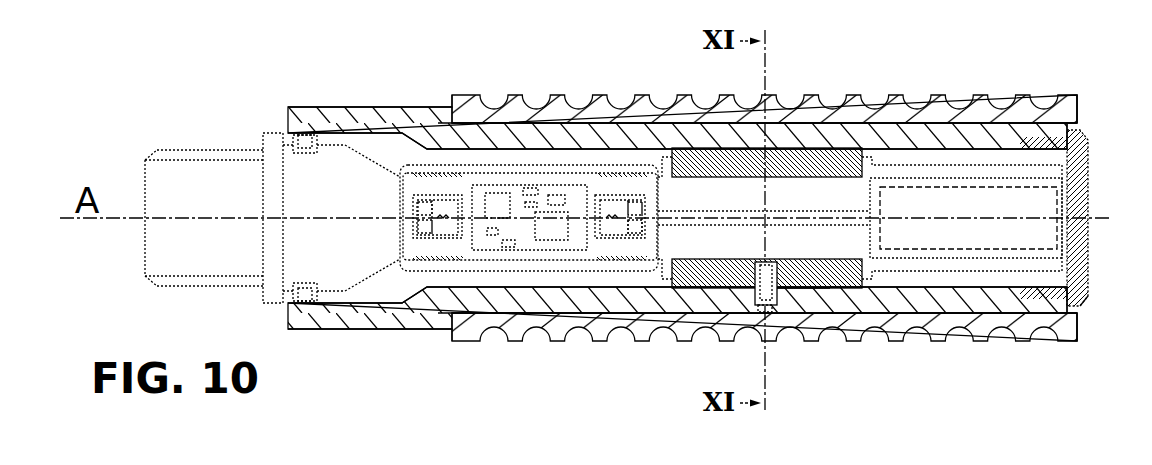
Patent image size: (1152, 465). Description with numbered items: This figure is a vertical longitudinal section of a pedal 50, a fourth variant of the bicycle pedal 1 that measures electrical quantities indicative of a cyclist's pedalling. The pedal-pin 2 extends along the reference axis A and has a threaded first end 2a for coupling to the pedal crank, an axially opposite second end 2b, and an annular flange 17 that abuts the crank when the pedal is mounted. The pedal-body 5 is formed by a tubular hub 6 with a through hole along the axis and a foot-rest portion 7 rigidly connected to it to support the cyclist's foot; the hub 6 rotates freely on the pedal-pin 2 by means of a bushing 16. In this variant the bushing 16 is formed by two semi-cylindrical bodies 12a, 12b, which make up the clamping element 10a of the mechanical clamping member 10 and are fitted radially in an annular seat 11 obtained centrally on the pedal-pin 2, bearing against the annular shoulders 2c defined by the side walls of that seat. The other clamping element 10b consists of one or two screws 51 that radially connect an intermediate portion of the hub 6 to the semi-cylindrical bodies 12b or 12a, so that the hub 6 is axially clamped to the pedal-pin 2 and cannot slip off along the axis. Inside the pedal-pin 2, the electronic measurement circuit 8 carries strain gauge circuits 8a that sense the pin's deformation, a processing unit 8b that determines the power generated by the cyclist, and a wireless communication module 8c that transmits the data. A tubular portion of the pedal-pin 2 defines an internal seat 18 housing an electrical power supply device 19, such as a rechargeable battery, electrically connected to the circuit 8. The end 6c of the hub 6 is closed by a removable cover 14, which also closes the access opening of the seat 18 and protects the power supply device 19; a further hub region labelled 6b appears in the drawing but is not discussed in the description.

The pedal 1 is at (678, 217).
The pedal-pin 2 is at (597, 230).
The first end 2a is at (193, 146).
The second end 2b is at (1070, 161).
The annular shoulders 2c is at (684, 166).
The pedal-body 5 is at (1079, 92).
The hub 6 is at (858, 148).
The flange 6b is at (286, 118).
The end of the hub 6c is at (1081, 124).
The foot-rest portion 7 is at (930, 97).
The electronic measurement circuit 8 is at (530, 230).
The electrical strain gauge circuits 8a is at (462, 239).
The processing unit 8b is at (502, 226).
The communication module 8c is at (557, 247).
The mechanical clamping member 10 is at (764, 227).
The clamping element 10a is at (810, 300).
The clamping element 10b is at (773, 318).
The annular seat 11 is at (845, 316).
The semi-cylindrical body 12a is at (702, 290).
The semi-cylindrical body 12b is at (748, 147).
The cap or cover 14 is at (1087, 284).
The bushing 16 is at (790, 148).
The annular crown or flange 17 is at (267, 295).
The internal compartment or seat 18 is at (1013, 244).
The electrical power supply device 19 is at (913, 228).
The pedal 50 is at (155, 203).
The screws 51 is at (779, 291).